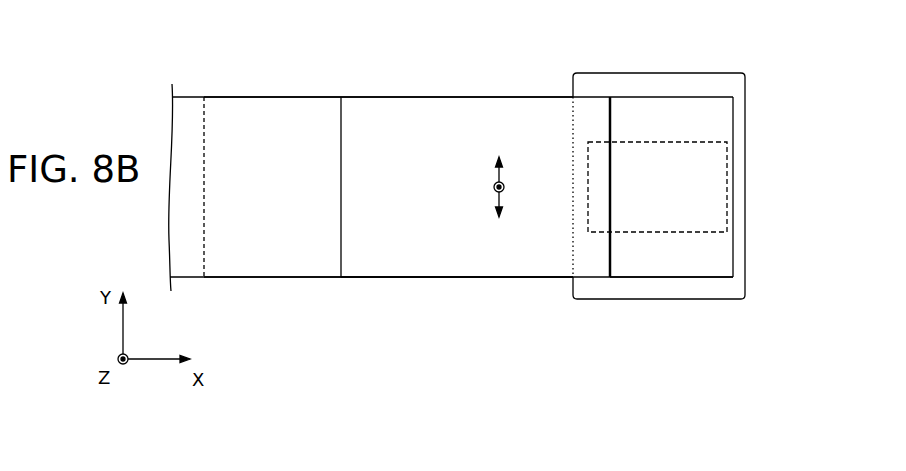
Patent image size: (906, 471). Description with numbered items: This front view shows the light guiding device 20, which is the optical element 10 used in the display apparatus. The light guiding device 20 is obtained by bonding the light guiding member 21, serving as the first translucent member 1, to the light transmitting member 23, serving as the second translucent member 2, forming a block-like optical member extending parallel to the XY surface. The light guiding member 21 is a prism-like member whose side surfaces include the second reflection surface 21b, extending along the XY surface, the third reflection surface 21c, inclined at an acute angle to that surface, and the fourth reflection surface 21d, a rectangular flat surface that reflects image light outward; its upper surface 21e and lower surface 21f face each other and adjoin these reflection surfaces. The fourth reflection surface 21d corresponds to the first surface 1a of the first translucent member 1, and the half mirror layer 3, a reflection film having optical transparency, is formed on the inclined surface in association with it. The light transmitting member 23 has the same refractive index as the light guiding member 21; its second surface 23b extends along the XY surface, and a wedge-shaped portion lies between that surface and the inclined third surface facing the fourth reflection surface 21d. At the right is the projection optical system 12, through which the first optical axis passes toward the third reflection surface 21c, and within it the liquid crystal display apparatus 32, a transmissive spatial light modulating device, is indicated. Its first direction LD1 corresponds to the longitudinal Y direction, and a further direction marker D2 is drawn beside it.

The light guiding device 20 is at (451, 145).
The optical element 10 is at (452, 76).
The light transmitting member 23 is at (248, 138).
The second translucent member 2 is at (189, 77).
The second surface 23b is at (267, 120).
The half mirror layer 3 is at (272, 312).
The fourth reflection surface 21d is at (272, 312).
The first surface 1a is at (275, 255).
The upper surface 21e is at (385, 97).
The lower surface 21f is at (355, 278).
The light guiding member 21 is at (462, 248).
The first translucent member 1 is at (462, 248).
The second reflection surface 21b is at (402, 237).
The third reflection surface 21c is at (655, 257).
The projection optical system 12 is at (640, 73).
The liquid crystal display apparatus 32 is at (697, 142).
The first direction LD1 is at (501, 187).
The direction D2 is at (504, 184).